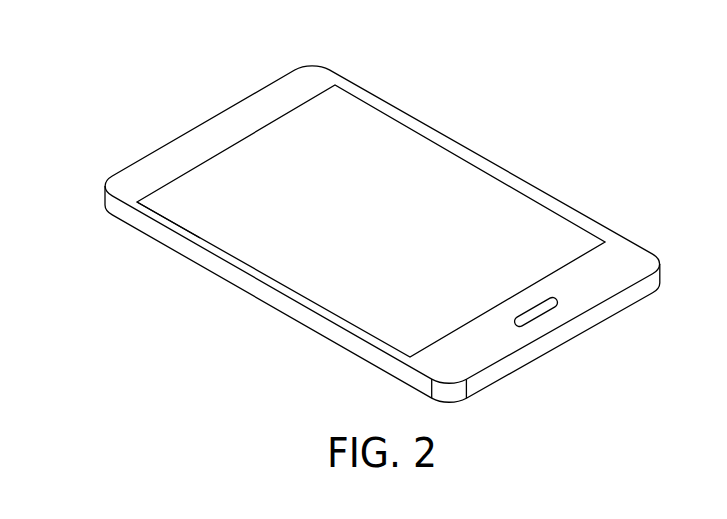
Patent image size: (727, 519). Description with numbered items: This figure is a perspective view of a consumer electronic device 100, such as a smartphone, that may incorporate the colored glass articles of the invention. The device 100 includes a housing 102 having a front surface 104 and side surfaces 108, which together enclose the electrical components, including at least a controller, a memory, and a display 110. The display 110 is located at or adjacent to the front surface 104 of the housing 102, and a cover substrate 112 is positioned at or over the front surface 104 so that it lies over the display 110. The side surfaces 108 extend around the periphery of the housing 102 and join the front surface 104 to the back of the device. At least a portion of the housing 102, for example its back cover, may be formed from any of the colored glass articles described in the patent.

The consumer electronic device 100 is at (357, 214).
The housing 102 is at (331, 71).
The front surface 104 is at (624, 262).
The side surfaces 108 is at (230, 281).
The display 110 is at (371, 198).
The cover substrate 112 is at (362, 312).